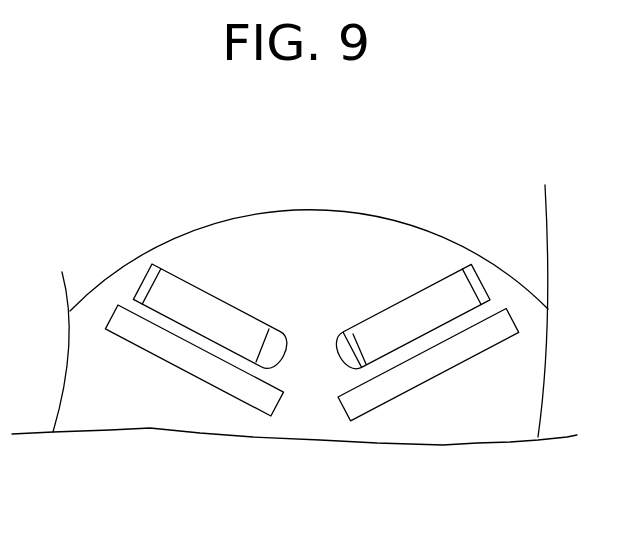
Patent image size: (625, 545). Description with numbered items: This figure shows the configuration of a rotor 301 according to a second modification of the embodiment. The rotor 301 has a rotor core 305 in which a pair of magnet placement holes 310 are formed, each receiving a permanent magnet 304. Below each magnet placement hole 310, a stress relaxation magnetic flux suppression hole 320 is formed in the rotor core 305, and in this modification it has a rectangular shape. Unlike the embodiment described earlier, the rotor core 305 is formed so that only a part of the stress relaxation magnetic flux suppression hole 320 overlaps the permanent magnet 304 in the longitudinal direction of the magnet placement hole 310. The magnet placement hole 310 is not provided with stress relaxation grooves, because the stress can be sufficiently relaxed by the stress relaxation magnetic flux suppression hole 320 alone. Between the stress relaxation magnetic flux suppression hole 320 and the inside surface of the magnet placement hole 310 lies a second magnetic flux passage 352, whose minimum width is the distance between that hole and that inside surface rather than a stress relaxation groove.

The rotor 301 is at (105, 159).
The permanent magnet 304 is at (171, 298).
The rotor core 305 is at (220, 238).
The magnet placement hole 310 is at (272, 348).
The stress relaxation magnetic flux suppression hole 320 is at (190, 368).
The second magnetic flux passage 352 is at (274, 380).